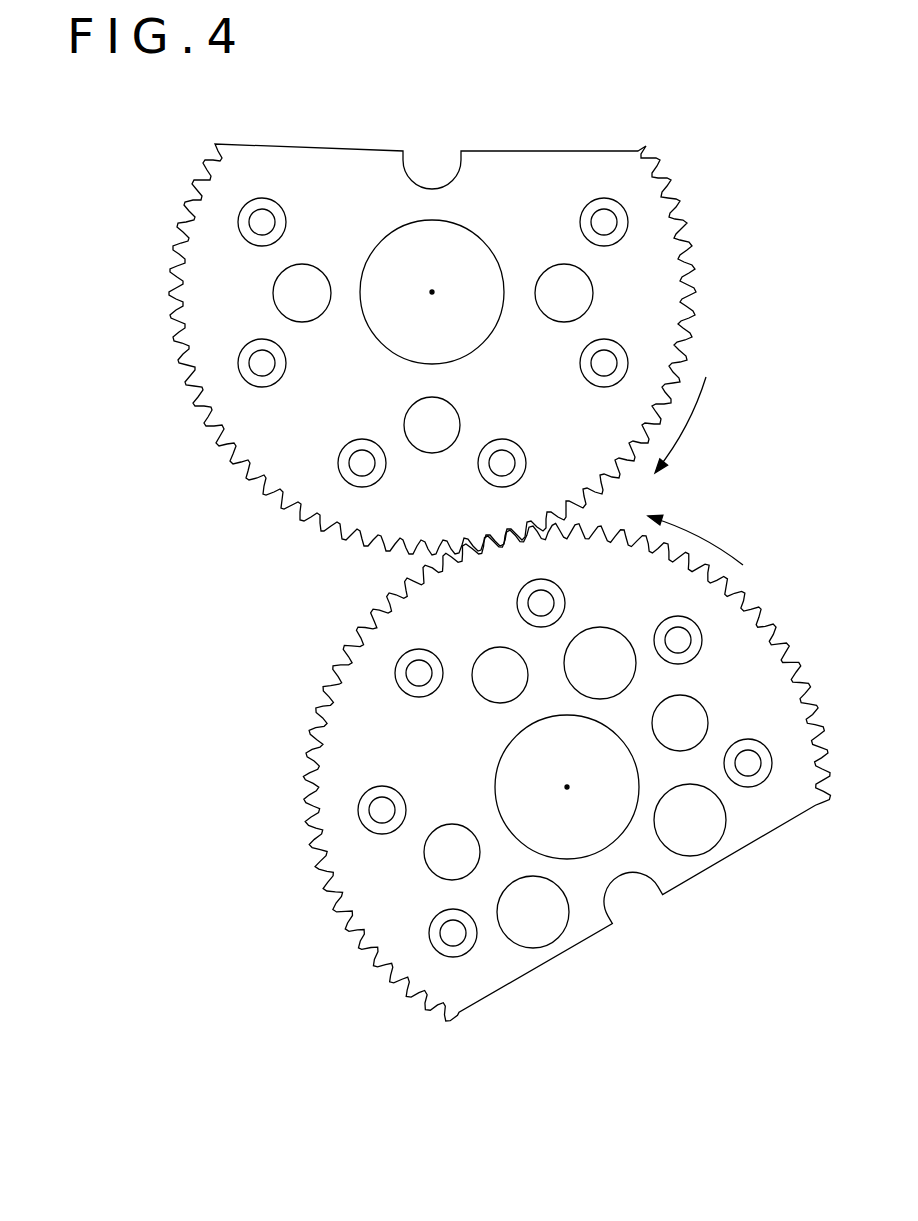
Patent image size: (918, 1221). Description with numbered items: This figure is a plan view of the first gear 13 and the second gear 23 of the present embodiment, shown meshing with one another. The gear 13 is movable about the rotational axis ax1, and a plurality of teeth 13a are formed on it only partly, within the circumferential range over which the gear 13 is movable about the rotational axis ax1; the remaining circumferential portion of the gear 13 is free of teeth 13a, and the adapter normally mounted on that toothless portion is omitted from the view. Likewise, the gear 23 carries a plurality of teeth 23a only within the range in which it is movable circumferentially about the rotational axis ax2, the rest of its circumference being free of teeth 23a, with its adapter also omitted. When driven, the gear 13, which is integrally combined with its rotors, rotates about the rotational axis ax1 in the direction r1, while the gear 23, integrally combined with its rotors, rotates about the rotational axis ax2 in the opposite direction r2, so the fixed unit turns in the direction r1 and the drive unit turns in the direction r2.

The gear 13 is at (465, 354).
The teeth 13a is at (432, 354).
The gear 23 is at (537, 736).
The teeth 23a is at (537, 736).
The rotational axis ax1 is at (432, 309).
The rotational axis ax2 is at (567, 806).
The direction r1 is at (685, 425).
The direction r2 is at (695, 539).